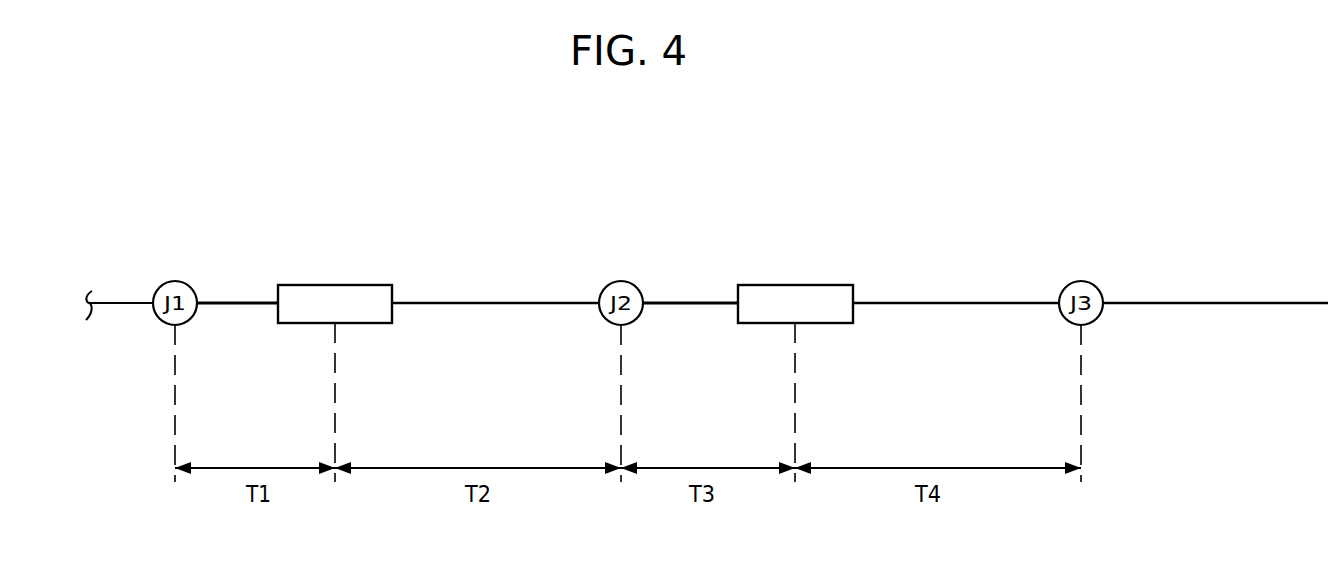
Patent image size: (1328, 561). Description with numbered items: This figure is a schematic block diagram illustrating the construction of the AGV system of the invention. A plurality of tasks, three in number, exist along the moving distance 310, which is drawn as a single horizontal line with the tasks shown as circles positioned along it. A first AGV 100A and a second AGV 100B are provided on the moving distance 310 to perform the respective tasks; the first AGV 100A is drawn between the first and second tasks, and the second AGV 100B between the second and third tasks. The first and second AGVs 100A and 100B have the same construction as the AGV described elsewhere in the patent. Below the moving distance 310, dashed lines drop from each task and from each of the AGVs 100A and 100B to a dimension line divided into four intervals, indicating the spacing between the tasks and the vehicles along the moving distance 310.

The first AGV 100A is at (360, 284).
The second AGV 100B is at (821, 284).
The moving distance 310 is at (1263, 302).